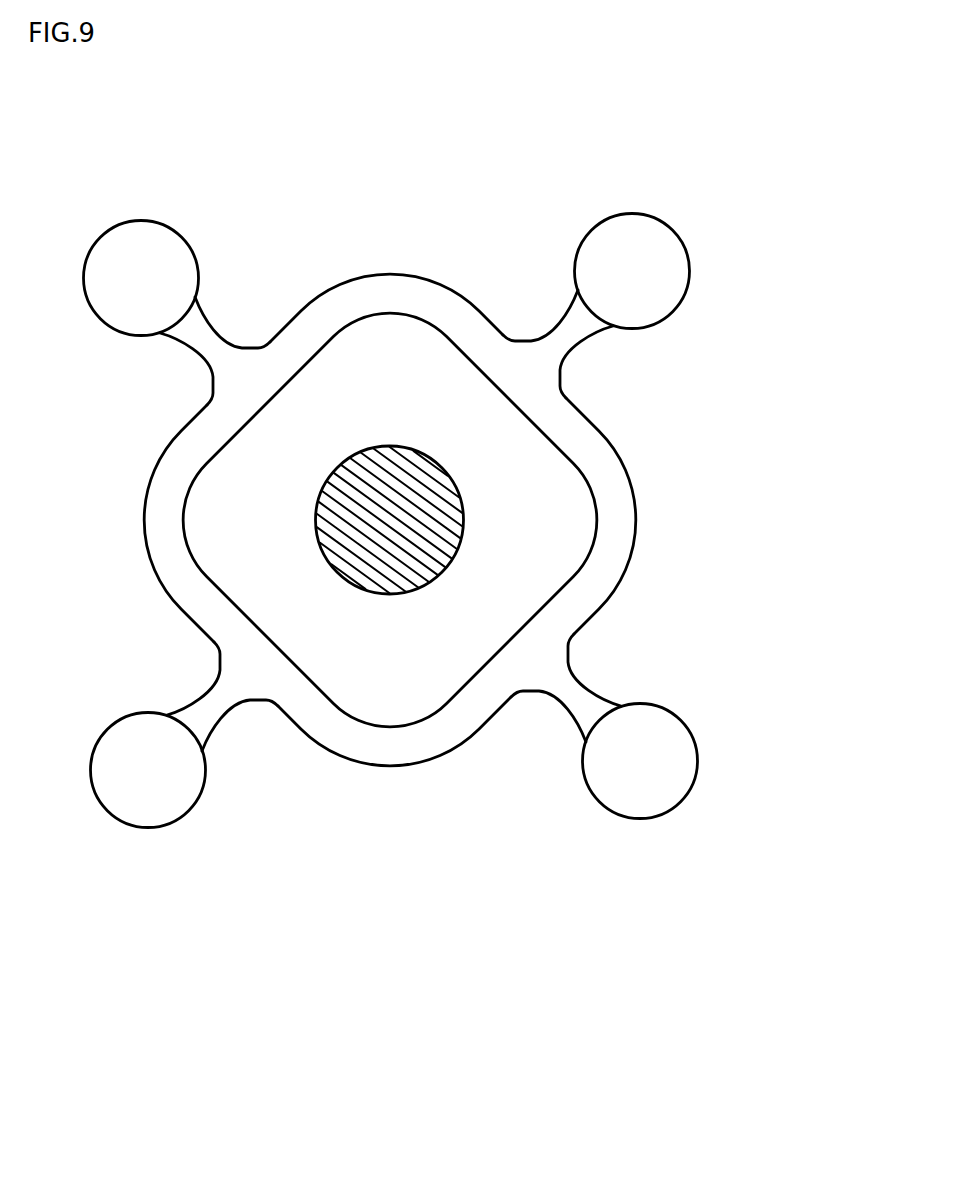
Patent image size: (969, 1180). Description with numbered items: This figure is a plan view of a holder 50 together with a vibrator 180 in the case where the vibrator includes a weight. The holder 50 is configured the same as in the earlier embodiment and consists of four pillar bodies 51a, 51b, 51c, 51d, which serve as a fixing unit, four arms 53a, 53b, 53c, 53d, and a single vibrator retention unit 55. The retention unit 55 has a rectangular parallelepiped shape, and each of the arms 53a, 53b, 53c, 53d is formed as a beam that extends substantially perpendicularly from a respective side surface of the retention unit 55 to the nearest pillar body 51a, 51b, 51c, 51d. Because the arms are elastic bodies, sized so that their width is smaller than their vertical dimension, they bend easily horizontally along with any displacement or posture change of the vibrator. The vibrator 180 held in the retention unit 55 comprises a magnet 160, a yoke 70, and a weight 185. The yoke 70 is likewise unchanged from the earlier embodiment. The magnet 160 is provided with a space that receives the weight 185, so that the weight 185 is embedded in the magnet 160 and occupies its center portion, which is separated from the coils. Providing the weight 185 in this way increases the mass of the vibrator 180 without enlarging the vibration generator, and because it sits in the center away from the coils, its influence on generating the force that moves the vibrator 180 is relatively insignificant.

The holder 50 is at (456, 280).
The pillar body 51a is at (672, 262).
The pillar body 51b is at (679, 775).
The pillar body 51c is at (112, 785).
The pillar body 51d is at (97, 268).
The arm 53a is at (562, 327).
The arm 53b is at (567, 722).
The arm 53c is at (217, 715).
The arm 53d is at (208, 333).
The vibrator retention unit 55 is at (487, 697).
The vibrator 180 is at (363, 374).
The weight 185 is at (427, 541).
The yoke 70 is at (366, 607).
The magnet 160 is at (552, 520).